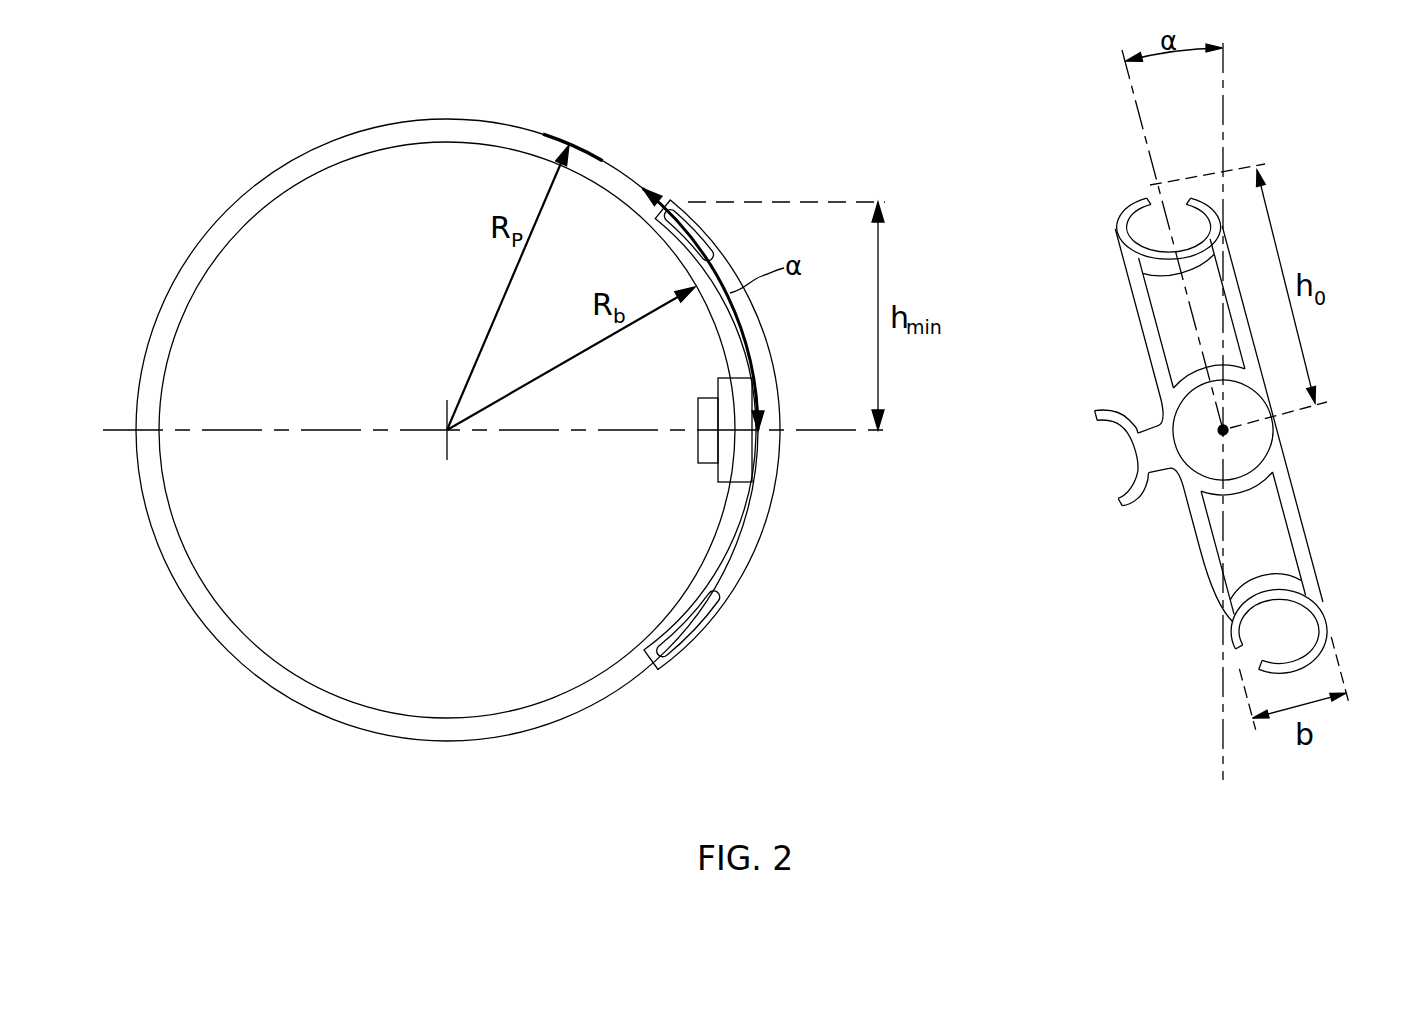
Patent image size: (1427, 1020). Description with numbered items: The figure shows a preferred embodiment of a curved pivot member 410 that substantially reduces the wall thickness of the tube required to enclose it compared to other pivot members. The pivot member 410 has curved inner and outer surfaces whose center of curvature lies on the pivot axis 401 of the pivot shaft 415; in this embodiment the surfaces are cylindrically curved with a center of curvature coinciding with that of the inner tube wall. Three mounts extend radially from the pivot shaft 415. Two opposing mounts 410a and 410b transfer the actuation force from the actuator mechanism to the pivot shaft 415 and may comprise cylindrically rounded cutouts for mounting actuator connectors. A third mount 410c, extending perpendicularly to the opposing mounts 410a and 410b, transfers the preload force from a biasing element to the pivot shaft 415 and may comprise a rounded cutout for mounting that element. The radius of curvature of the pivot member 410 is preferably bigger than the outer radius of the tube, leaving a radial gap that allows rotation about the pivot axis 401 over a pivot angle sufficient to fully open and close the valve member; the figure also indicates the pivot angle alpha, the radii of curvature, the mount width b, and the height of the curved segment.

The pivot axis 401 is at (345, 436).
The pivot member 410 is at (730, 587).
The pivot shaft 415 is at (708, 448).
The opposing mount 410a is at (1163, 285).
The opposing mount 410b is at (1277, 568).
The mount 410c is at (1150, 468).